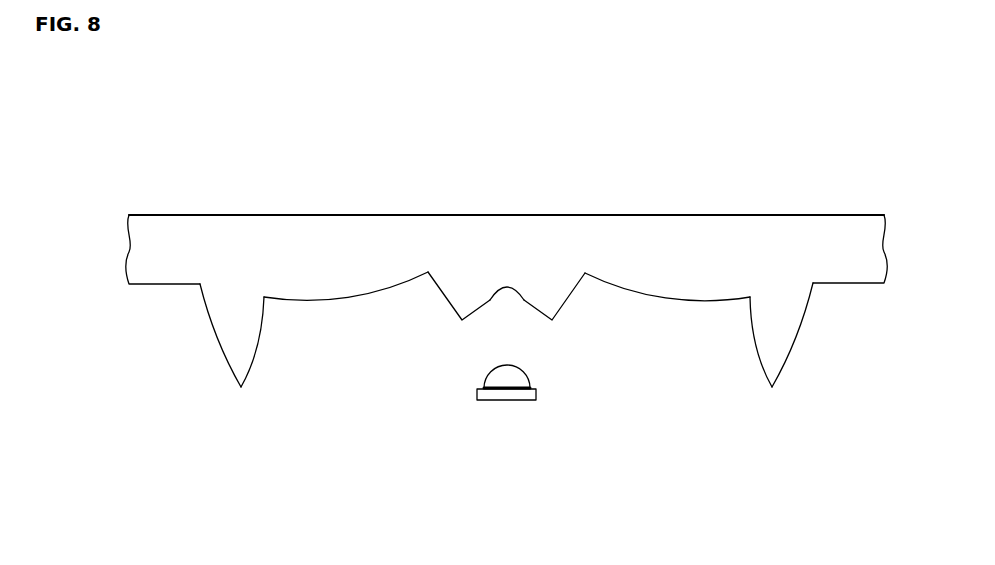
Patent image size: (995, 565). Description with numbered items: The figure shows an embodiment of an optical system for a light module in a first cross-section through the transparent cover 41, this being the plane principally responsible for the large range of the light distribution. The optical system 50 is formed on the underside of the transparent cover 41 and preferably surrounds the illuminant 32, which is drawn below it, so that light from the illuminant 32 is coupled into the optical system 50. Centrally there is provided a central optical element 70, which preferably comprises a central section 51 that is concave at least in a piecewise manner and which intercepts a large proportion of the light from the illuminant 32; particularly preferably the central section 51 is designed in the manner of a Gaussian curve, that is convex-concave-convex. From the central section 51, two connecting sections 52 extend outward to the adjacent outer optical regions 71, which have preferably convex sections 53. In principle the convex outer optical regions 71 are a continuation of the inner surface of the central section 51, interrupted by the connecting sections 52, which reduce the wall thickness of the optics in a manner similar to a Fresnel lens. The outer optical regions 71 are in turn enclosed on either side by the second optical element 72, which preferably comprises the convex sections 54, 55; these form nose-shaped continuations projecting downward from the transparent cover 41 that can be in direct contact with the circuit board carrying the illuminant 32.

The illuminant 32 is at (507, 375).
The transparent cover 41 is at (168, 243).
The optical system 50 is at (510, 325).
The central section 51 is at (492, 299).
The connecting section 52 is at (448, 300).
The convex section 53 is at (348, 297).
The convex section 54 is at (257, 360).
The convex section 55 is at (226, 362).
The central optical element 70 is at (502, 272).
The outer optical region 71 is at (347, 277).
The second optical element 72 is at (237, 315).